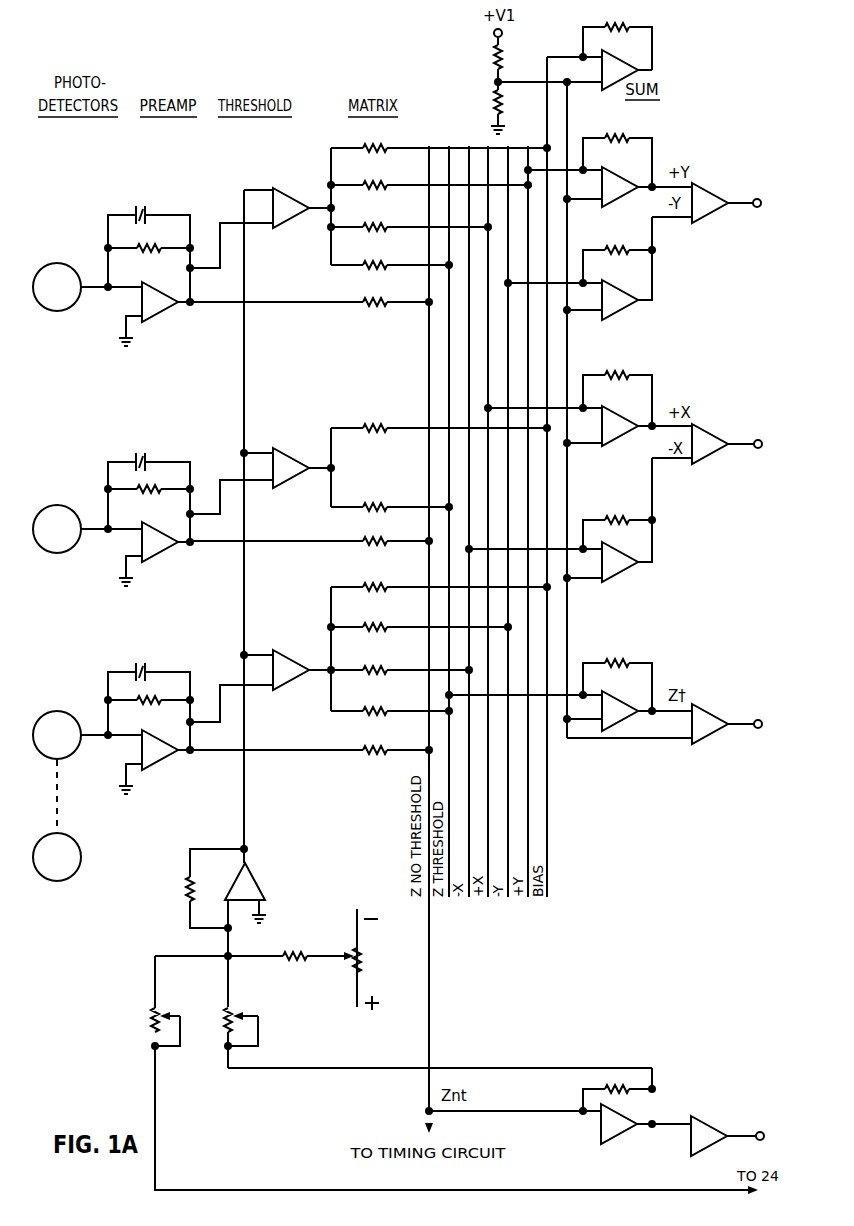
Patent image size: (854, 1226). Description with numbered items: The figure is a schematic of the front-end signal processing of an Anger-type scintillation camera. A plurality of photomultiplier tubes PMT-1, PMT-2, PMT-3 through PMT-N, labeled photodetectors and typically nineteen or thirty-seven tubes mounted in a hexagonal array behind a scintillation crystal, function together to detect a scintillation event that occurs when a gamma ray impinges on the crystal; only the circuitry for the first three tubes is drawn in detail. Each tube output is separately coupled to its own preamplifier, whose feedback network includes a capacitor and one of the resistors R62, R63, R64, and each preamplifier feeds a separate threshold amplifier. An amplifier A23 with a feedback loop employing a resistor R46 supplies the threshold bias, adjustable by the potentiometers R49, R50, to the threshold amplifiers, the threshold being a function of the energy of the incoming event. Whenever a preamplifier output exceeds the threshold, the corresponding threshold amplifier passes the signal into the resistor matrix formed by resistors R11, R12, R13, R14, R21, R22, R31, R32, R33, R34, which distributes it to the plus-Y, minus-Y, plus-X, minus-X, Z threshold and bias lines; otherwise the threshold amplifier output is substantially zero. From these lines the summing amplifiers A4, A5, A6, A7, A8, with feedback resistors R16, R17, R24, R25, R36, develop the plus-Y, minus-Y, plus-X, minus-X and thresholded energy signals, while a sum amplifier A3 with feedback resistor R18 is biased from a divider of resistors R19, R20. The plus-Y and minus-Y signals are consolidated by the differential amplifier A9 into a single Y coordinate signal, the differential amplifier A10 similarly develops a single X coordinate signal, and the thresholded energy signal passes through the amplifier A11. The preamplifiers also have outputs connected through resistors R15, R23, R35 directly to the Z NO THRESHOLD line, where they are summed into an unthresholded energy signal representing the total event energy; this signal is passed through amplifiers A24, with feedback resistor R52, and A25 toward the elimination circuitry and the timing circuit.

The photomultiplier tube PMT-1 is at (87, 287).
The photomultiplier tube PMT-2 is at (87, 529).
The photomultiplier tube PMT-3 is at (87, 735).
The photomultiplier tube PMT-N is at (57, 820).
The preamplifier feedback resistor R62 is at (149, 257).
The preamplifier feedback resistor R63 is at (149, 498).
The preamplifier feedback resistor R64 is at (149, 709).
The matrix resistor R11 is at (440, 136).
The matrix resistor R12 is at (429, 173).
The matrix resistor R13 is at (409, 215).
The matrix resistor R14 is at (391, 253).
The resistor R15 is at (311, 290).
The matrix resistor R21 is at (440, 416).
The matrix resistor R22 is at (391, 495).
The resistor R23 is at (311, 529).
The matrix resistor R31 is at (440, 575).
The matrix resistor R32 is at (419, 615).
The matrix resistor R33 is at (401, 658).
The matrix resistor R34 is at (391, 699).
The resistor R35 is at (311, 738).
The feedback resistor of amplifier A4 R16 is at (617, 148).
The feedback resistor of amplifier A5 R17 is at (619, 253).
The feedback resistor of sum amplifier A3 R18 is at (617, 35).
The bias divider resistor R19 is at (481, 63).
The bias divider resistor R20 is at (482, 108).
The feedback resistor of amplifier A6 R24 is at (617, 386).
The feedback resistor of amplifier A7 R25 is at (619, 521).
The feedback resistor of amplifier A8 R36 is at (617, 673).
The resistor R46 is at (199, 890).
The threshold adjusting potentiometer R49 is at (225, 1038).
The threshold adjusting potentiometer R50 is at (149, 1002).
The feedback resistor of amplifier A24 R52 is at (626, 1082).
The sum amplifier A3 is at (599, 70).
The summing amplifier A4 is at (608, 187).
The summing amplifier A5 is at (578, 268).
The summing amplifier A6 is at (588, 425).
The summing amplifier A7 is at (559, 520).
The summing amplifier A8 is at (569, 711).
The differential amplifier A9 is at (706, 199).
The differential amplifier A10 is at (707, 441).
The amplifier A11 is at (664, 717).
The amplifier A23 is at (245, 884).
The amplifier A24 is at (560, 1124).
The amplifier A25 is at (728, 1127).